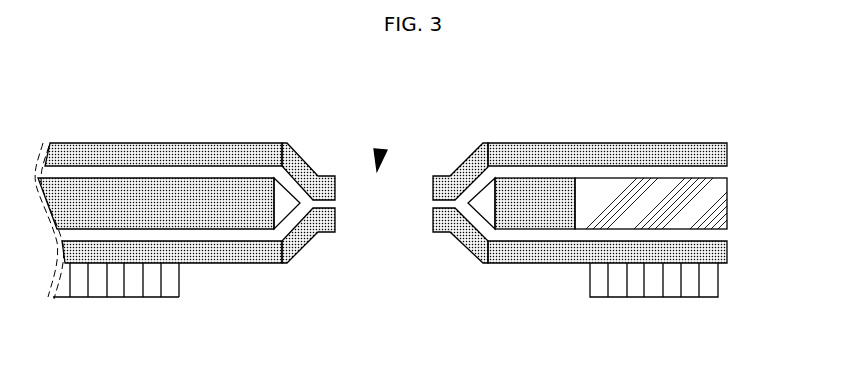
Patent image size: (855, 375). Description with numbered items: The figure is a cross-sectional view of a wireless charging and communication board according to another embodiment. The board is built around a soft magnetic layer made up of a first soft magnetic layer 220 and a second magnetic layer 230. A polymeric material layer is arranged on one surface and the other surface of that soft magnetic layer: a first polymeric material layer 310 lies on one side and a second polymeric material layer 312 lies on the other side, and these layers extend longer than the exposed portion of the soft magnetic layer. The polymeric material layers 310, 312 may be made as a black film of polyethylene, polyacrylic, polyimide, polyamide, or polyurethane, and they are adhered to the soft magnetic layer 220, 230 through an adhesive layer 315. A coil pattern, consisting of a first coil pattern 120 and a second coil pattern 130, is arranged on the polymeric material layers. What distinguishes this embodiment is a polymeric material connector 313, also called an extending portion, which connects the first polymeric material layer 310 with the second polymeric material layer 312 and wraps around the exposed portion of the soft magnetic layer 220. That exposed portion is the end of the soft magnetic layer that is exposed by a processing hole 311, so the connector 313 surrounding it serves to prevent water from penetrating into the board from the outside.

The first coil pattern 120 is at (118, 297).
The second coil pattern 130 is at (643, 297).
The first soft magnetic layer 220 is at (180, 180).
The second magnetic layer 230 is at (725, 193).
The first polymeric material layer 310 is at (386, 205).
The processing hole 311 is at (383, 145).
The second polymeric material layer 312 is at (255, 262).
The polymeric material connector 313 is at (303, 160).
The adhesive layer 315 is at (108, 168).